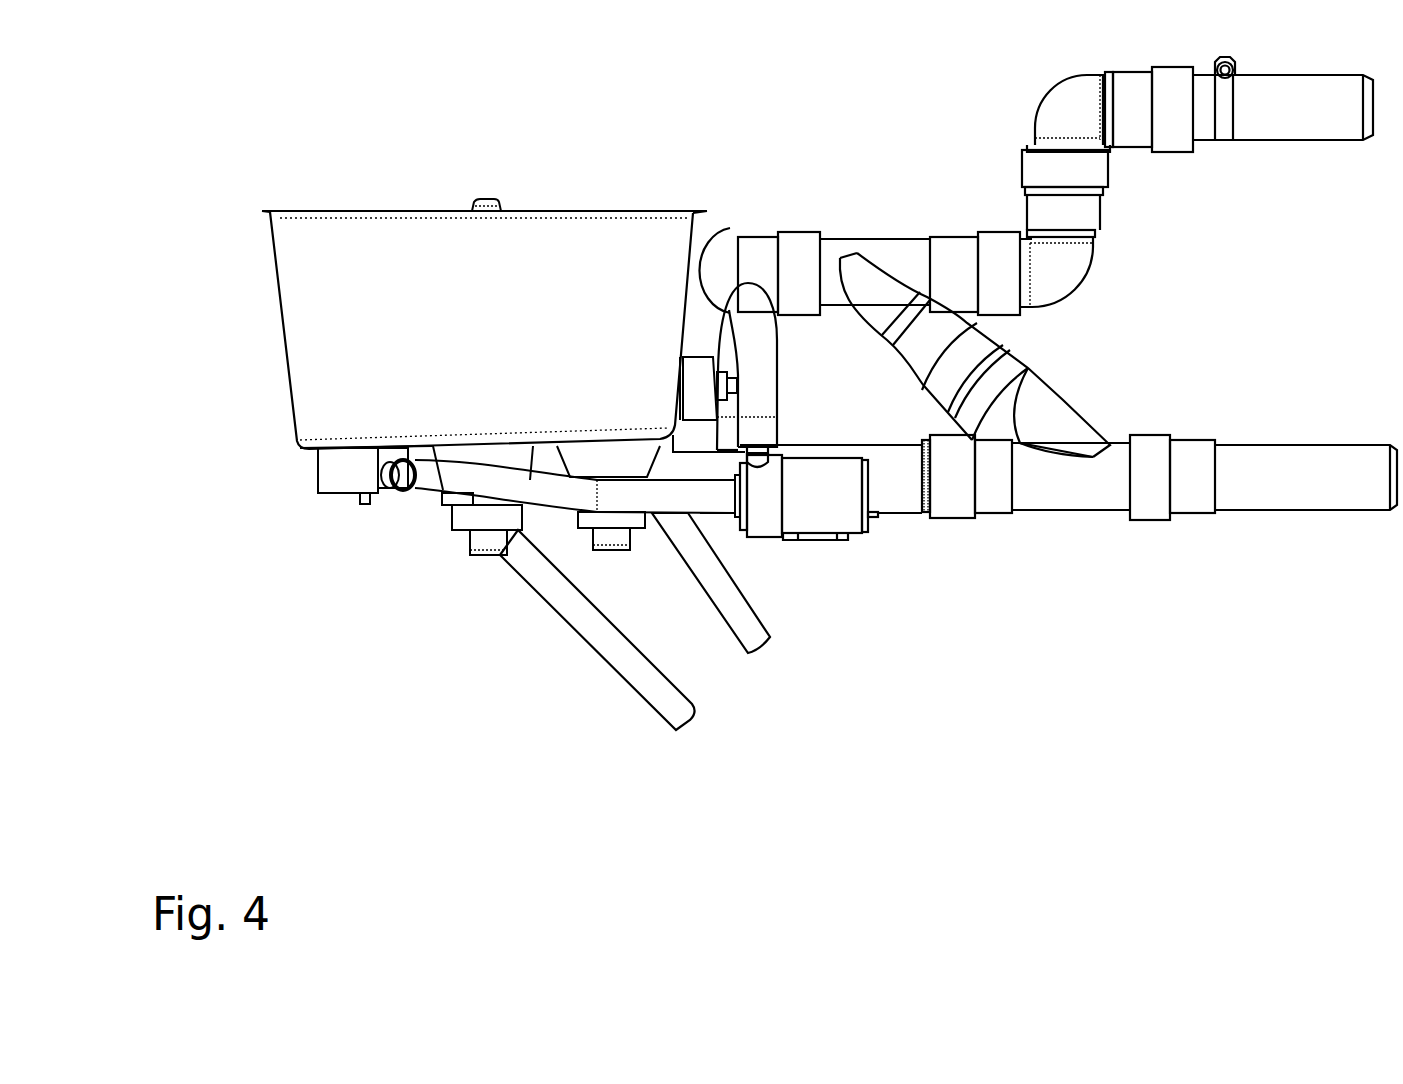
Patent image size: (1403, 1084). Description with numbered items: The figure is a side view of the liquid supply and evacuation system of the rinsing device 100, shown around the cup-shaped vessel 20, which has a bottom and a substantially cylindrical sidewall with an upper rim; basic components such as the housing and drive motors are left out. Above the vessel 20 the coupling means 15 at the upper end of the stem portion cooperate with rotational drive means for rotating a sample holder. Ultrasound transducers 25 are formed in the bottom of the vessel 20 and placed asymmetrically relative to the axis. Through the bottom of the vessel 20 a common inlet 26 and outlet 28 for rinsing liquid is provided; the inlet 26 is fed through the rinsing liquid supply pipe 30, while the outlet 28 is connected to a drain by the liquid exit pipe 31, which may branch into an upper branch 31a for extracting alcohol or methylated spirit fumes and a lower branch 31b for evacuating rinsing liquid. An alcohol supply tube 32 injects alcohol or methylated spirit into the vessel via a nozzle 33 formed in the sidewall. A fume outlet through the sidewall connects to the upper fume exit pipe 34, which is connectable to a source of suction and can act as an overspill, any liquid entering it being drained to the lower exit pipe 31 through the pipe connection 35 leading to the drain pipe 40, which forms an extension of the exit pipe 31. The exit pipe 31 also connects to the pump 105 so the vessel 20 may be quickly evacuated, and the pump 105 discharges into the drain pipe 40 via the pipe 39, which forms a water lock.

The rinsing device 100 is at (177, 162).
The coupling means 15 is at (518, 177).
The vessel 20 is at (484, 296).
The ultrasound transducer 25 is at (480, 518).
The inlet 26 is at (333, 480).
The outlet 28 is at (348, 470).
The rinsing liquid supply pipe 30 is at (580, 638).
The liquid exit pipe 31 is at (452, 508).
The upper branch 31a is at (679, 555).
The lower branch 31b is at (710, 513).
The alcohol supply tube 32 is at (732, 313).
The nozzle 33 is at (697, 393).
The upper fume exit pipe 34 is at (898, 238).
The pipe connection 35 is at (932, 382).
The pipe 39 is at (833, 502).
The drain pipe 40 is at (1187, 480).
The pump 105 is at (752, 380).